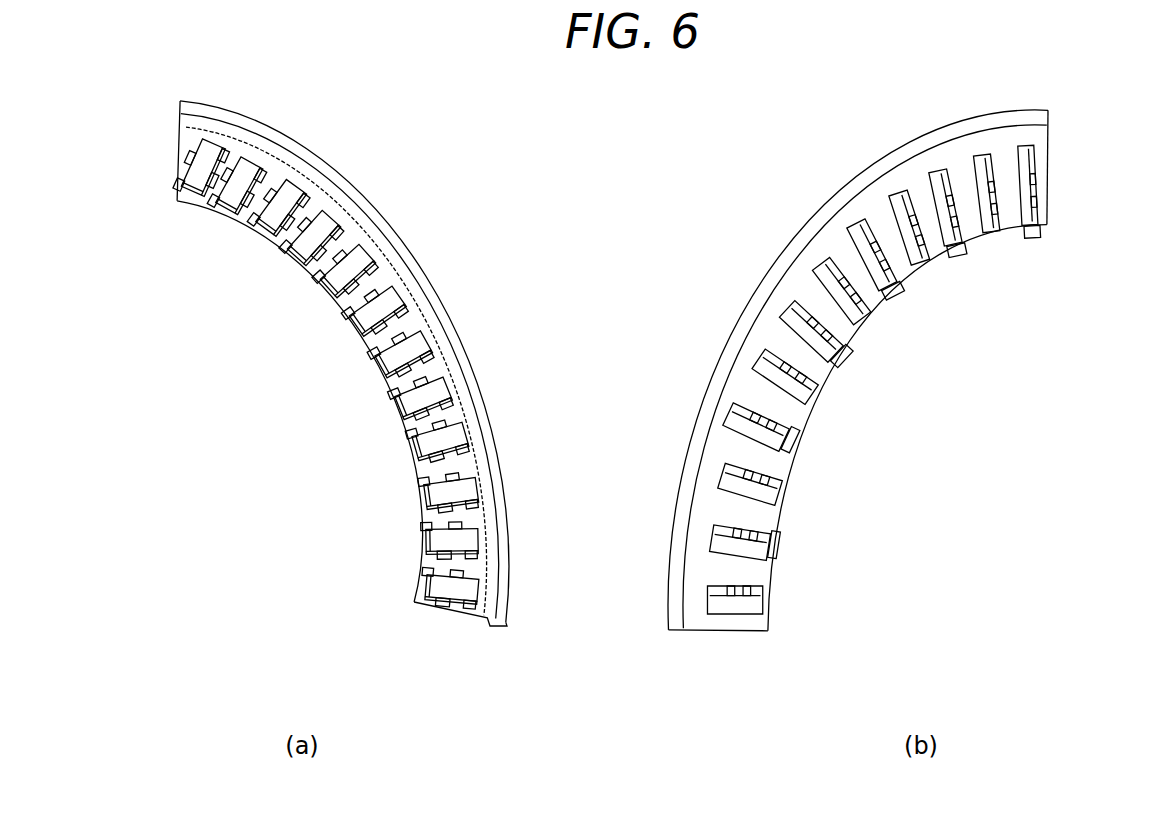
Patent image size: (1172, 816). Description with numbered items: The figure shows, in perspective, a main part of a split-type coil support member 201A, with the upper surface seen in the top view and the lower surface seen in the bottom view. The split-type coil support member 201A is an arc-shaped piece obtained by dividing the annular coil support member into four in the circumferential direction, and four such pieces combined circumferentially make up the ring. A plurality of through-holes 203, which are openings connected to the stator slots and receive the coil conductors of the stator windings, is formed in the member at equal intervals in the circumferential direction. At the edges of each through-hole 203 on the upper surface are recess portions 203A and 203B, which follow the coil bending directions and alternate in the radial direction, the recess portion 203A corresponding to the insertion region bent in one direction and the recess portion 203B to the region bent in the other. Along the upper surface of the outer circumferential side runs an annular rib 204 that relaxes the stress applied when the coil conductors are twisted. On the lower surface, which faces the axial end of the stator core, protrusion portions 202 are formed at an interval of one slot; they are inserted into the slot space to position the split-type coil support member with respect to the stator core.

The split-type coil support member 201A is at (228, 143).
The protrusion portion 202 is at (1046, 224).
The through-hole 203 is at (433, 583).
The recess portion 203A is at (457, 575).
The recess portion 203B is at (443, 606).
The annular rib 204 is at (497, 490).